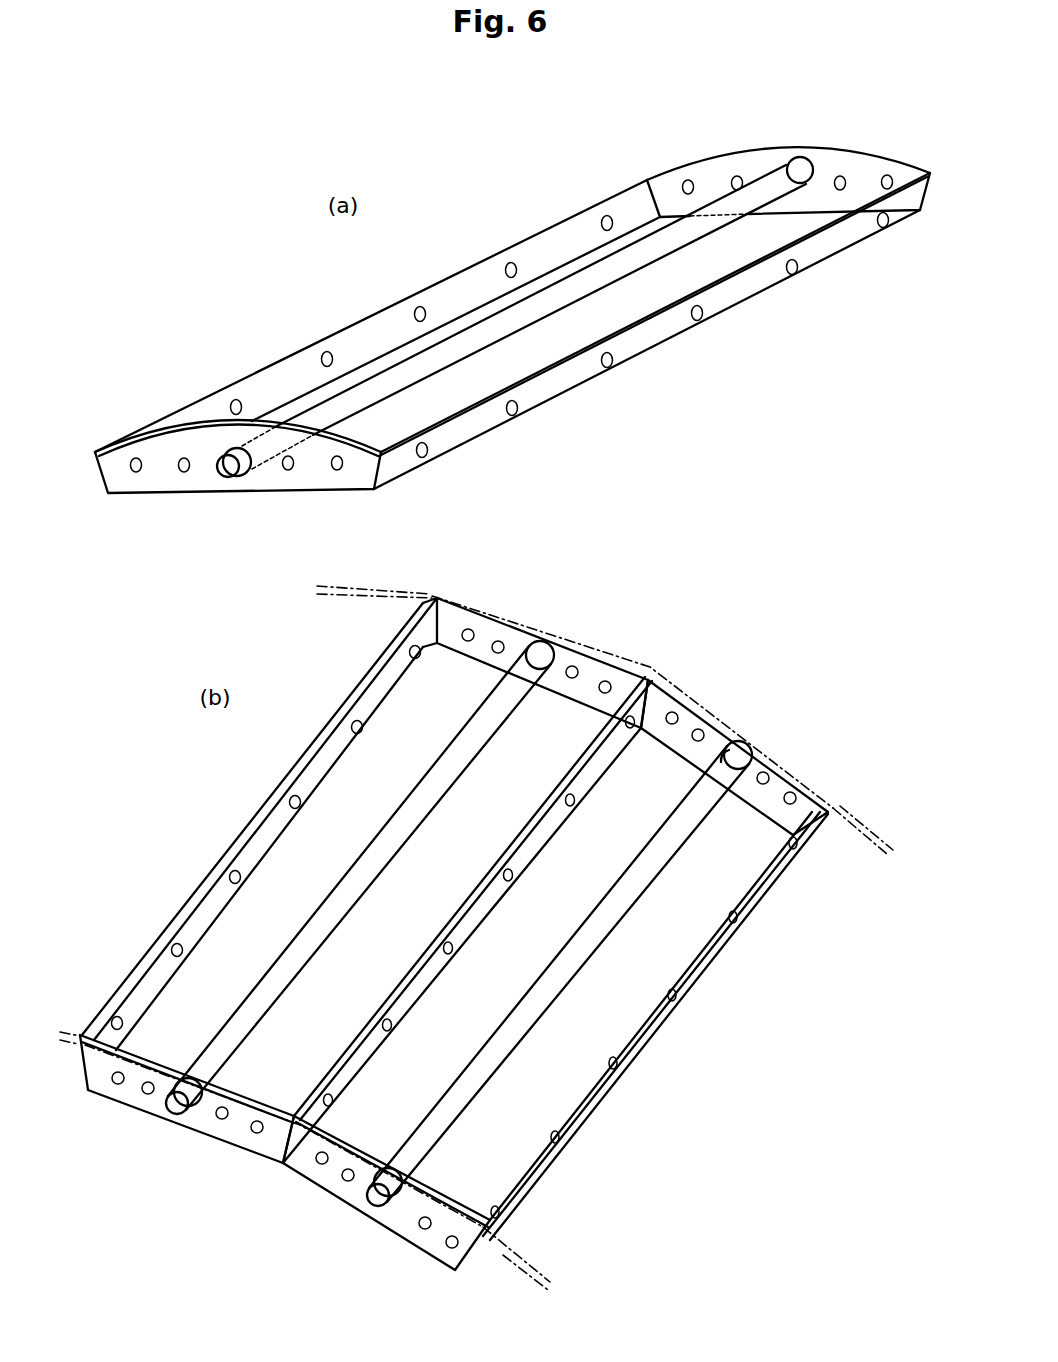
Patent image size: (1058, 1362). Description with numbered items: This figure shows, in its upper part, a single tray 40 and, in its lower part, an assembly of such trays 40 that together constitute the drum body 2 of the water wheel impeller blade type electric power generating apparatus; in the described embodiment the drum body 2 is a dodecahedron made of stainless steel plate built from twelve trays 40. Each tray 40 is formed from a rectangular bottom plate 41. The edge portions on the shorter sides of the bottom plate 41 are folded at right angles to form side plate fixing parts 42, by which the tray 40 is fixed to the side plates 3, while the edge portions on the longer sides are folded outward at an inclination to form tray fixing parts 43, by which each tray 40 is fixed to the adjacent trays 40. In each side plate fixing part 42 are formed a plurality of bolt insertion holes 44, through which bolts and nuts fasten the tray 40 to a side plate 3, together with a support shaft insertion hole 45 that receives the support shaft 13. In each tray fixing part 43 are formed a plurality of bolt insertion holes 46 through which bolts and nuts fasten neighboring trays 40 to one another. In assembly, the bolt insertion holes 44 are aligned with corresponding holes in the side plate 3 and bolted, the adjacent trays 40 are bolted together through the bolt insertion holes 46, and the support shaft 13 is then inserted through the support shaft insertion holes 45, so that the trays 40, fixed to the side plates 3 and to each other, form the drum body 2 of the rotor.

The drum body 2 is at (736, 665).
The side plate 3 is at (850, 812).
The support shaft 13 is at (693, 233).
The tray 40 is at (557, 209).
The bottom plate 41 is at (633, 303).
The side plate fixing part 42 is at (160, 480).
The tray fixing part 43 is at (465, 285).
The bolt insertion hole 44 is at (287, 471).
The support shaft insertion hole 45 is at (238, 476).
The bolt insertion hole 46 is at (414, 313).